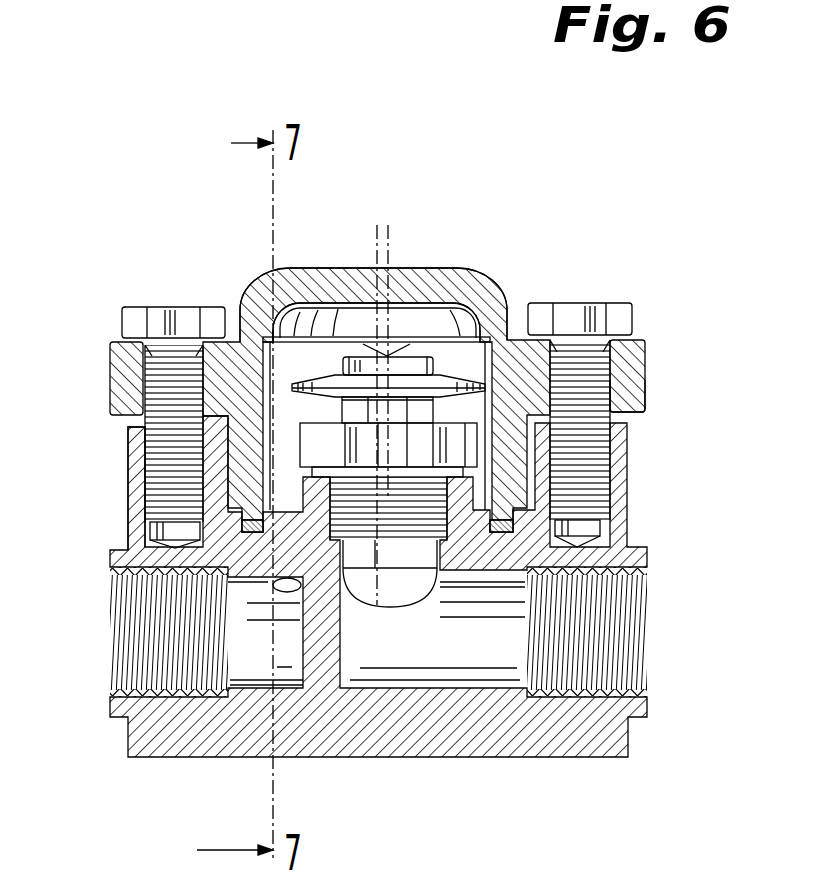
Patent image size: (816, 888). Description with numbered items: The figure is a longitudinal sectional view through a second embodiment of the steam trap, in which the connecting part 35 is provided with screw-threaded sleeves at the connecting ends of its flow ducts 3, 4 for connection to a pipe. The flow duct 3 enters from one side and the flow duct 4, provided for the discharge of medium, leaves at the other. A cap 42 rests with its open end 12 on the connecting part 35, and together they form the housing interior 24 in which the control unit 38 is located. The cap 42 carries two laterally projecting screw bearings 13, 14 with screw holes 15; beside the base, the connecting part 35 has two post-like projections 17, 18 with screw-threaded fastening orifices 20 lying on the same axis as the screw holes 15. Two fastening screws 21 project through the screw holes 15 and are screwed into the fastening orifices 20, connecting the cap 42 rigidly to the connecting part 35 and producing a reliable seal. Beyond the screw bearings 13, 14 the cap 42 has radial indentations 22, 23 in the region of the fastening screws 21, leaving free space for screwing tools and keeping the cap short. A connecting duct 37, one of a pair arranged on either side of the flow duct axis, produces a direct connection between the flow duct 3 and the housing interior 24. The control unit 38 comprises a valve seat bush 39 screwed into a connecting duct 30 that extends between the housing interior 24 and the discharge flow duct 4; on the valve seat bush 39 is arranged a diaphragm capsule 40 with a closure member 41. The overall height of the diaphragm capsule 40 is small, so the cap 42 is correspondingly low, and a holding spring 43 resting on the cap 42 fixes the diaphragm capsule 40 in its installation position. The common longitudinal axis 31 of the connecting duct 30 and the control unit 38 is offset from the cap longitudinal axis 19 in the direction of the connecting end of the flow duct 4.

The flow duct 3 is at (152, 647).
The flow duct 4 is at (608, 633).
The open end 12 is at (500, 533).
The screw bearing 13 is at (122, 378).
The screw bearing 14 is at (632, 365).
The screw hole 15 is at (618, 388).
The projection 17 is at (130, 473).
The projection 18 is at (620, 457).
The cap longitudinal axis 19 is at (377, 236).
The fastening orifice 20 is at (592, 528).
The fastening screw 21 is at (133, 321).
The radial indentation 22 is at (238, 317).
The radial indentation 23 is at (507, 297).
The housing interior 24 is at (270, 300).
The connecting duct 30 is at (395, 590).
The control unit longitudinal axis 31 is at (388, 236).
The connecting part 35 is at (497, 757).
The connecting duct 37 is at (282, 592).
The control unit 38 is at (520, 300).
The valve seat bush 39 is at (328, 453).
The diaphragm capsule 40 is at (363, 366).
The closure member 41 is at (392, 403).
The cap 42 is at (445, 272).
The holding spring 43 is at (478, 366).